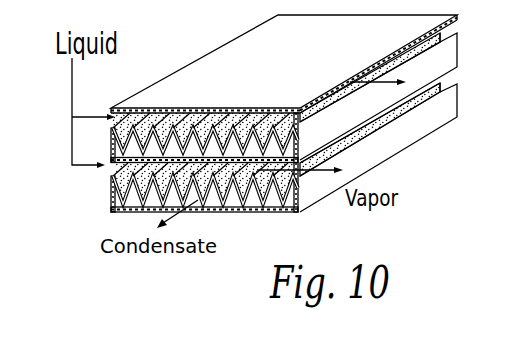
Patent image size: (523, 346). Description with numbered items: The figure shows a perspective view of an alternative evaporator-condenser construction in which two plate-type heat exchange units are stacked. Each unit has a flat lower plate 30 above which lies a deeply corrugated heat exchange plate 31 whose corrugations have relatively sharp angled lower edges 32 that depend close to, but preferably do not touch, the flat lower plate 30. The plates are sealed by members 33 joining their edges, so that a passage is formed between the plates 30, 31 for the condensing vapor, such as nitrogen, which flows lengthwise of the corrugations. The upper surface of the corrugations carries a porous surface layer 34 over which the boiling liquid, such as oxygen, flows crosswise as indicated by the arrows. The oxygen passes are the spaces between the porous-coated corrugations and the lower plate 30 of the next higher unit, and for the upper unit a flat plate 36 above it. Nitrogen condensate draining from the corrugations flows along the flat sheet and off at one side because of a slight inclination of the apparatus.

The flat lower plate 30 is at (276, 124).
The corrugated heat exchange plate 31 is at (205, 124).
The lower edges of the corrugations 32 is at (242, 125).
The sealing members 33 is at (453, 100).
The porous surface layer 34 is at (164, 128).
The flat plate 36 is at (237, 53).